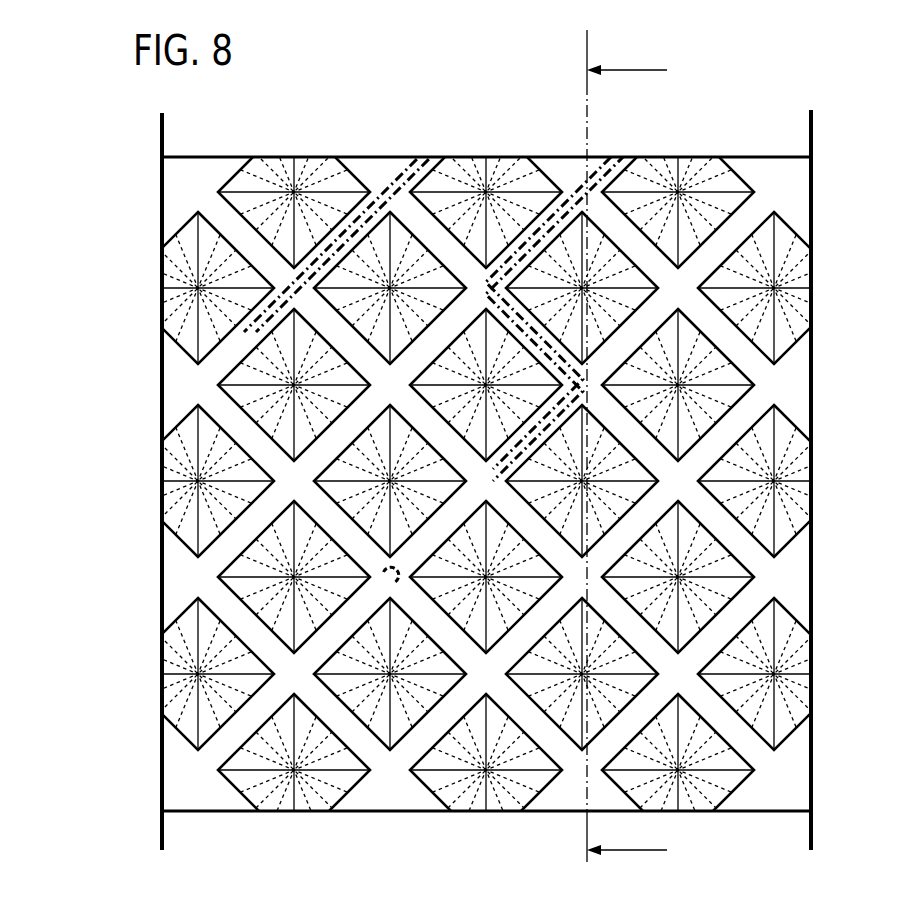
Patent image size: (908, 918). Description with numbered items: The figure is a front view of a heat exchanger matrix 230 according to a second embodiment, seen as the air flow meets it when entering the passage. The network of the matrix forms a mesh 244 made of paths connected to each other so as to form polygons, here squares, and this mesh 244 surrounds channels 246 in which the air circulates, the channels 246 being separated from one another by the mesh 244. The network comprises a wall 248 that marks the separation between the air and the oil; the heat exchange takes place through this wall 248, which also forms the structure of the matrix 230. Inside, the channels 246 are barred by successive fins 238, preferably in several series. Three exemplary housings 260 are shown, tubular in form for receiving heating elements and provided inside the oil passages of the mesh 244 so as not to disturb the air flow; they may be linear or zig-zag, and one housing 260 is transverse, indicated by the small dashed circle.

The matrix 230 is at (379, 88).
The fins 238 is at (528, 796).
The mesh 244 is at (770, 170).
The channels 246 is at (168, 246).
The wall 248 is at (240, 170).
The housings 260 is at (590, 175).